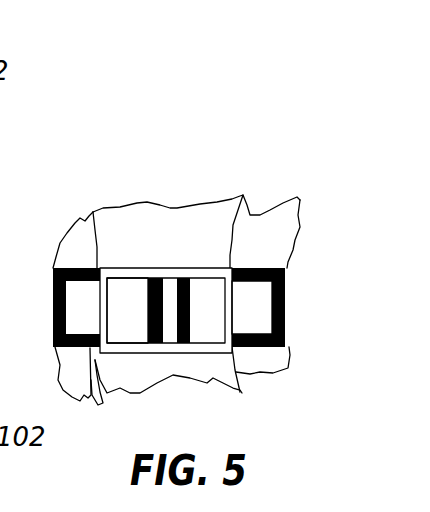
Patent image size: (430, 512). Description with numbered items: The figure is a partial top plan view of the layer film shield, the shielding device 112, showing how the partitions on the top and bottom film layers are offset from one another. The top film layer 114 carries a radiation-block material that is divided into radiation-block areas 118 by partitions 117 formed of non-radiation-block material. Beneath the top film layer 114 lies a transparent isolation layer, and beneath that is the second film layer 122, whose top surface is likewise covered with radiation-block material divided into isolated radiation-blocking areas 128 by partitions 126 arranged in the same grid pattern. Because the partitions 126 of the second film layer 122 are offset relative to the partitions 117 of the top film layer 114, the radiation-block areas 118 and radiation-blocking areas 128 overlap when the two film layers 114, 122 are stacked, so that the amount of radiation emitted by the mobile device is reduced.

The shielding device 112 is at (252, 109).
The top film layer 114 is at (173, 227).
The partitions 117 is at (118, 268).
The radiation-block areas 118 is at (123, 305).
The second film layer 122 is at (285, 202).
The partitions 126 is at (292, 268).
The radiation-blocking areas 128 is at (263, 317).